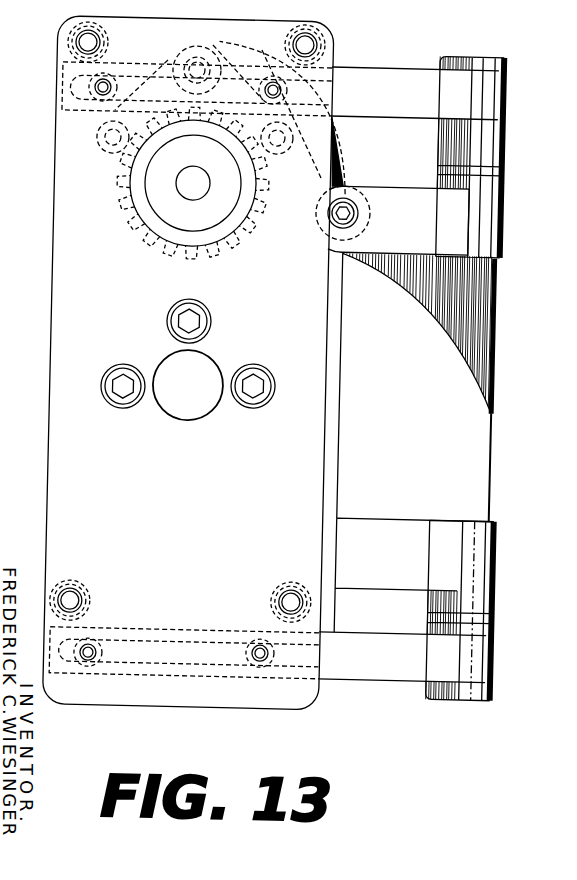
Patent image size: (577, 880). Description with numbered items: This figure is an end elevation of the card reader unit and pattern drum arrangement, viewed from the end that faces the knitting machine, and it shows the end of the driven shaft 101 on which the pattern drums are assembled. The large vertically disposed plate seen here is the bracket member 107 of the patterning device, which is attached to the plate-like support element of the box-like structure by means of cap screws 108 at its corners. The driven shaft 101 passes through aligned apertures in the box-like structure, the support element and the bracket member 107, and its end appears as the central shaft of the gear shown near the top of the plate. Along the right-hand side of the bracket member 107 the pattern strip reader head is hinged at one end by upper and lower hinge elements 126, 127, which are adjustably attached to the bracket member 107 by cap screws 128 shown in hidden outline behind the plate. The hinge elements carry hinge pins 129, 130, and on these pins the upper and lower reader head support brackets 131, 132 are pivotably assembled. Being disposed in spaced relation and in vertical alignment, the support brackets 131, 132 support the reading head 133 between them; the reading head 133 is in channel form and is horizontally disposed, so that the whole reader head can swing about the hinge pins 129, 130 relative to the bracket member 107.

The driven shaft 101 is at (197, 186).
The bracket member 107 is at (73, 394).
The cap screws 108 is at (76, 47).
The upper hinge element 126 is at (409, 74).
The lower hinge element 127 is at (364, 668).
The cap screws 128 is at (96, 92).
The hinge pin 129 is at (489, 54).
The hinge pin 130 is at (480, 699).
The upper reader head support bracket 131 is at (490, 226).
The lower reader head support bracket 132 is at (492, 560).
The reading head 133 is at (482, 419).